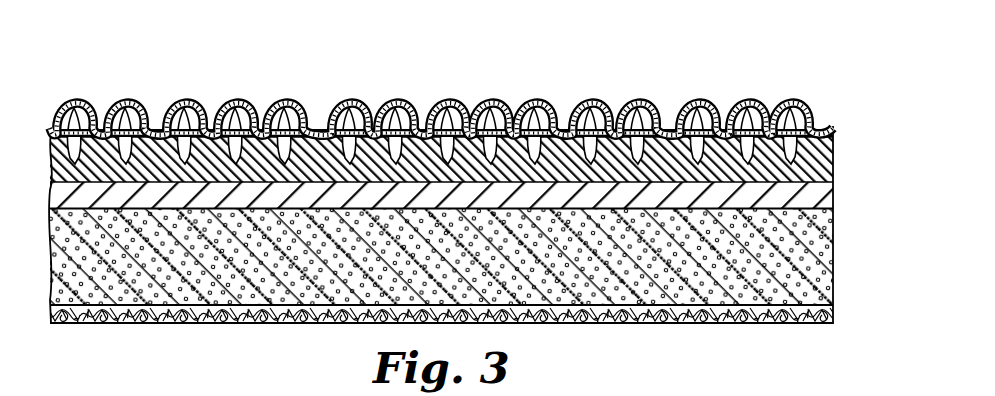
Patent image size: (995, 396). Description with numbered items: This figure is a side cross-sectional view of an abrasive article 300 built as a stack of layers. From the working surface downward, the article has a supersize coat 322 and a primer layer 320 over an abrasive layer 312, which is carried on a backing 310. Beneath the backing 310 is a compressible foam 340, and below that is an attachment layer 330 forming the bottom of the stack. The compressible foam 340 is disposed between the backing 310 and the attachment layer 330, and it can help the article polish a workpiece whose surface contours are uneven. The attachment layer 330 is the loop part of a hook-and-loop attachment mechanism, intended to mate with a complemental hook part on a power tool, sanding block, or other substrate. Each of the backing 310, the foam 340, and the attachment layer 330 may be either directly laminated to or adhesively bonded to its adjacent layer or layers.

The abrasive article 300 is at (786, 49).
The backing 310 is at (823, 205).
The abrasive layer 312 is at (840, 180).
The primer layer 320 is at (137, 103).
The supersize coat 322 is at (283, 105).
The compressible foam 340 is at (820, 250).
The attachment layer 330 is at (825, 316).